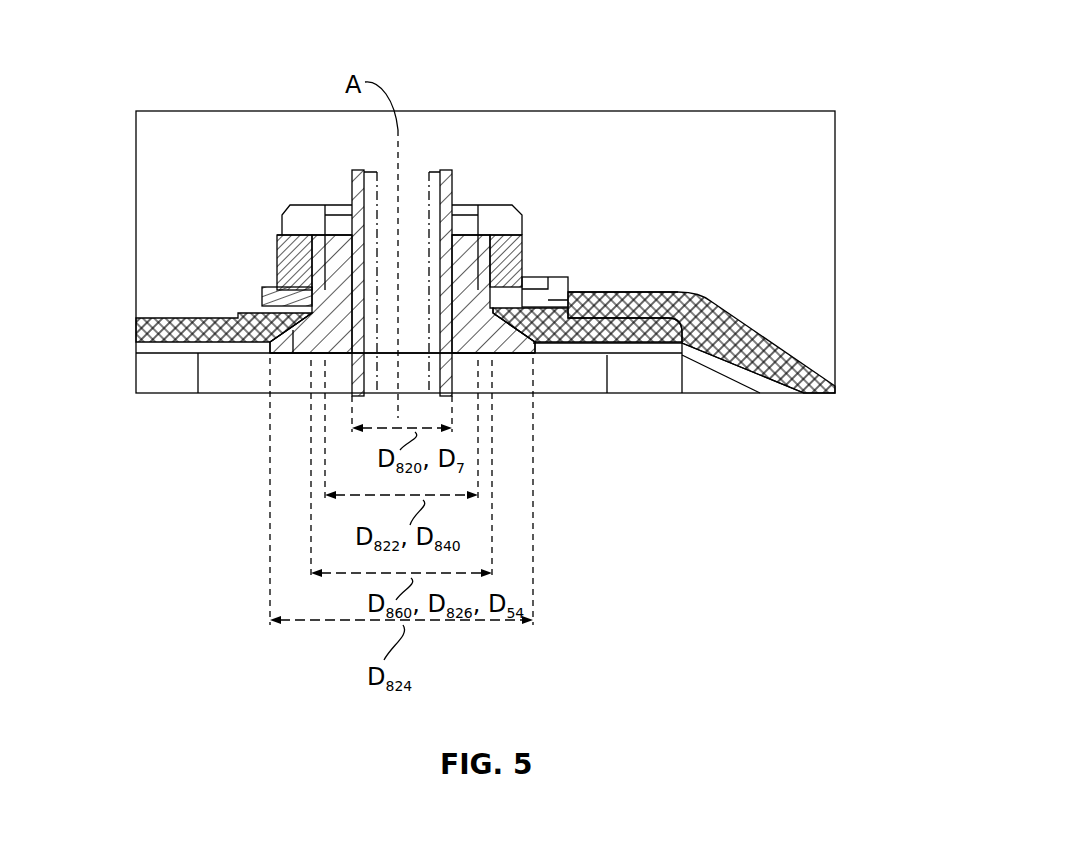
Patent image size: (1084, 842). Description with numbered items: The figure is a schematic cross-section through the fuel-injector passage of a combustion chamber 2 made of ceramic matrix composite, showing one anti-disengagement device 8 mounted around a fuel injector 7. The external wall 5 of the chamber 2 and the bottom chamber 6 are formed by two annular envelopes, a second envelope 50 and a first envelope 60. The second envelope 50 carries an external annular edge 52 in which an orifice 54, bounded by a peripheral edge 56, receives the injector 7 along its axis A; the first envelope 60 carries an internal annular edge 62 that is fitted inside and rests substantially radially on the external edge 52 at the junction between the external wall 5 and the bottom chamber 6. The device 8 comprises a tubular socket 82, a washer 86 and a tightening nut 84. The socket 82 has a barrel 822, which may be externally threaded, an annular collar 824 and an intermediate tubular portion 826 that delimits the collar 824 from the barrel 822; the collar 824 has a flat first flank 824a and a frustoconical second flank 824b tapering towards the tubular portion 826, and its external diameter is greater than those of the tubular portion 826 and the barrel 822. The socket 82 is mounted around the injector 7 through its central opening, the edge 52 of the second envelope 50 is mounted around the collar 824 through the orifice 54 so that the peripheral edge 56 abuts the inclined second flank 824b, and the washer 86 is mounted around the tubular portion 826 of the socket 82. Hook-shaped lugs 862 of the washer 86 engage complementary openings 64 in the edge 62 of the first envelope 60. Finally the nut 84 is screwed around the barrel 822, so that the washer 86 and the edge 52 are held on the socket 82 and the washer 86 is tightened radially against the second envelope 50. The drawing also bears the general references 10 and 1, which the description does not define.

The assembly 10 is at (845, 12).
The installation 1 is at (806, 86).
The external wall 5 is at (100, 280).
The second envelope 50 is at (157, 327).
The annular edge 52 is at (653, 335).
The orifice 54 is at (528, 340).
The peripheral edge 56 is at (578, 338).
The first envelope 60 is at (800, 377).
The annular edge 62 is at (697, 300).
The openings 64 is at (556, 292).
The chamber 2 is at (160, 383).
The bottom chamber 6 is at (903, 313).
The fuel injector 7 is at (352, 169).
The anti-disengagement device 8 is at (266, 236).
The socket 82 is at (327, 272).
The barrel 822 is at (478, 285).
The annular collar 824 is at (493, 329).
The first flank 824a is at (270, 344).
The second flank 824b is at (292, 355).
The tubular portion 826 is at (262, 292).
The tightening nut 84 is at (300, 247).
The washer 86 is at (512, 257).
The lugs 862 is at (546, 305).